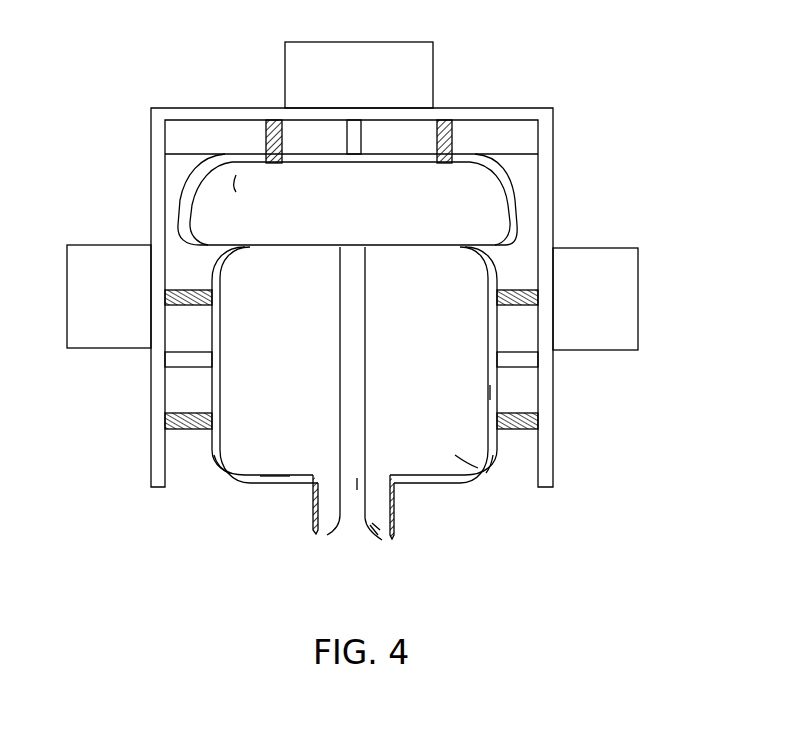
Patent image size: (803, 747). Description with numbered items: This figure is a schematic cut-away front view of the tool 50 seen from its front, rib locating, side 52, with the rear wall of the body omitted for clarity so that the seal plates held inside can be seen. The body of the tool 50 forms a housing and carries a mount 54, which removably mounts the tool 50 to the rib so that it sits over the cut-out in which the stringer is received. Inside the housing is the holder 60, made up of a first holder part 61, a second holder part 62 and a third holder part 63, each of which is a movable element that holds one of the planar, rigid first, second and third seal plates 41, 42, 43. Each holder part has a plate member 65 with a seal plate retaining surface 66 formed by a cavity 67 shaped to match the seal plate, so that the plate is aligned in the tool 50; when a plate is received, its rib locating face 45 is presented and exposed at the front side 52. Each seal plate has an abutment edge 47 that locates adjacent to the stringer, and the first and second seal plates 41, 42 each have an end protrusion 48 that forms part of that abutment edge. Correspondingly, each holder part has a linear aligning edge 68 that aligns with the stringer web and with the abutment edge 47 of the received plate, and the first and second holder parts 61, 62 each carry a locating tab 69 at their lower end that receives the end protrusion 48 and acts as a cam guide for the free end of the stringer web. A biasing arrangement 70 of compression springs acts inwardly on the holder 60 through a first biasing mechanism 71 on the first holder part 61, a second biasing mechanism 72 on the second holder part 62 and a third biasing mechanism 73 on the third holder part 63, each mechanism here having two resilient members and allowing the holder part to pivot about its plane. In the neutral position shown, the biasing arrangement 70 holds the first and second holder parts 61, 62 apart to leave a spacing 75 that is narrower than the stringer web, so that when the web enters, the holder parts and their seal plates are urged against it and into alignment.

The tool 50 is at (594, 78).
The front, rib locating, side 52 is at (155, 172).
The mount 54 is at (640, 298).
The third biasing mechanism 73 is at (272, 120).
The third holder part 63 is at (462, 158).
The rib locating face 45 is at (480, 185).
The third seal plate 43 is at (237, 175).
The holder 60 is at (242, 388).
The spacing 75 is at (345, 297).
The abutment edge 47 is at (362, 380).
The end protrusion 48 is at (322, 522).
The plate member 65 is at (412, 485).
The second biasing mechanism 72 is at (167, 295).
The biasing arrangement 70 is at (167, 423).
The seal plate retaining surface 66 is at (487, 327).
The first biasing mechanism 71 is at (537, 418).
The cavity 67 is at (487, 393).
The second holder part 62 is at (225, 472).
The second seal plate 42 is at (275, 480).
The aligning edge 68 is at (362, 478).
The locating tab 69 is at (377, 530).
The first seal plate 41 is at (458, 457).
The first holder part 61 is at (493, 460).